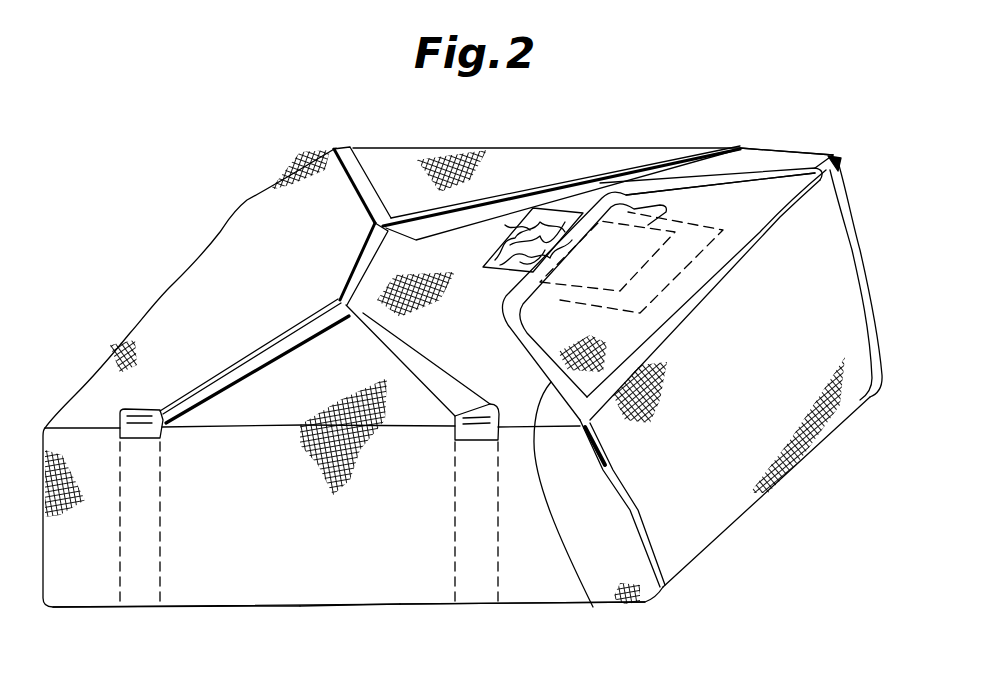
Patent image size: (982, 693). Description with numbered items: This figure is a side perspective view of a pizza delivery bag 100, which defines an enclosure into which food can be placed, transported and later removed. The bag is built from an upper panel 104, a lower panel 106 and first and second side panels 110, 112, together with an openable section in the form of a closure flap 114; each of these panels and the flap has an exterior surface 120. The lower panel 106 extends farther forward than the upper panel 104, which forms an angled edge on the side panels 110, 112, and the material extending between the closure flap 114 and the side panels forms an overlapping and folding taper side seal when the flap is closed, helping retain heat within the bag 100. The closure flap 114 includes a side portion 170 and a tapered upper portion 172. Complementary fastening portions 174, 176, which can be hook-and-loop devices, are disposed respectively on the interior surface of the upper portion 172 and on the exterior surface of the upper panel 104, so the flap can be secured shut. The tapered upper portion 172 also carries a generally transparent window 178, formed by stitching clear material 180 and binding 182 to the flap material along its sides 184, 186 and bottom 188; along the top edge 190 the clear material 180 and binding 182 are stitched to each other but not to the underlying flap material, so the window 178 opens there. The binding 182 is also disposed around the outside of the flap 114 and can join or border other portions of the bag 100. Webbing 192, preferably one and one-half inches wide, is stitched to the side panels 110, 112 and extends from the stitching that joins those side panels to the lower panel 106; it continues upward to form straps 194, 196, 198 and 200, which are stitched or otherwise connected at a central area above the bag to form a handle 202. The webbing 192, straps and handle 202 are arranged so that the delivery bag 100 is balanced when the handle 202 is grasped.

The pizza delivery bag 100 is at (343, 128).
The upper panel 104 is at (263, 217).
The lower panel 106 is at (408, 605).
The first side panel 110 is at (351, 596).
The second side panel 112 is at (836, 160).
The closure flap 114 is at (803, 450).
The exterior surface 120 is at (240, 332).
The side portion 170 is at (725, 529).
The tapered upper portion 172 is at (822, 185).
The fastening portion 174 is at (625, 212).
The fastening portion 176 is at (571, 209).
The transparent window 178 is at (757, 203).
The clear material 180 is at (730, 196).
The binding 182 is at (470, 283).
The side 184 is at (593, 608).
The side 186 is at (800, 160).
The bottom 188 is at (777, 217).
The top edge 190 is at (650, 195).
The webbing 192 is at (160, 557).
The strap 194 is at (191, 384).
The strap 196 is at (427, 388).
The strap 198 is at (373, 173).
The strap 200 is at (520, 195).
The handle 202 is at (333, 285).